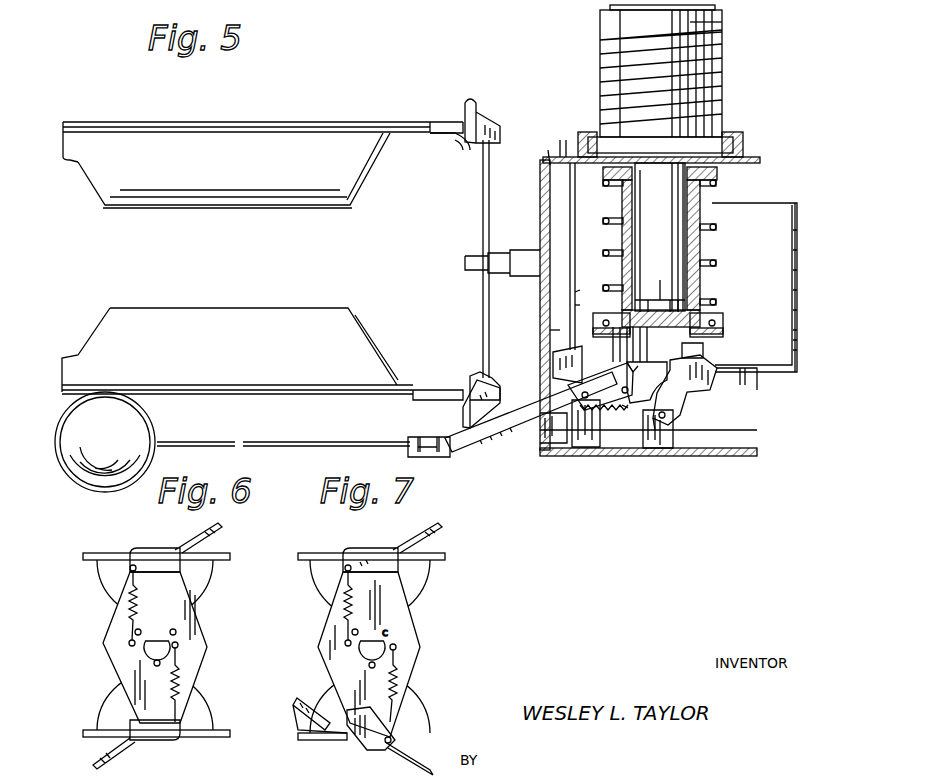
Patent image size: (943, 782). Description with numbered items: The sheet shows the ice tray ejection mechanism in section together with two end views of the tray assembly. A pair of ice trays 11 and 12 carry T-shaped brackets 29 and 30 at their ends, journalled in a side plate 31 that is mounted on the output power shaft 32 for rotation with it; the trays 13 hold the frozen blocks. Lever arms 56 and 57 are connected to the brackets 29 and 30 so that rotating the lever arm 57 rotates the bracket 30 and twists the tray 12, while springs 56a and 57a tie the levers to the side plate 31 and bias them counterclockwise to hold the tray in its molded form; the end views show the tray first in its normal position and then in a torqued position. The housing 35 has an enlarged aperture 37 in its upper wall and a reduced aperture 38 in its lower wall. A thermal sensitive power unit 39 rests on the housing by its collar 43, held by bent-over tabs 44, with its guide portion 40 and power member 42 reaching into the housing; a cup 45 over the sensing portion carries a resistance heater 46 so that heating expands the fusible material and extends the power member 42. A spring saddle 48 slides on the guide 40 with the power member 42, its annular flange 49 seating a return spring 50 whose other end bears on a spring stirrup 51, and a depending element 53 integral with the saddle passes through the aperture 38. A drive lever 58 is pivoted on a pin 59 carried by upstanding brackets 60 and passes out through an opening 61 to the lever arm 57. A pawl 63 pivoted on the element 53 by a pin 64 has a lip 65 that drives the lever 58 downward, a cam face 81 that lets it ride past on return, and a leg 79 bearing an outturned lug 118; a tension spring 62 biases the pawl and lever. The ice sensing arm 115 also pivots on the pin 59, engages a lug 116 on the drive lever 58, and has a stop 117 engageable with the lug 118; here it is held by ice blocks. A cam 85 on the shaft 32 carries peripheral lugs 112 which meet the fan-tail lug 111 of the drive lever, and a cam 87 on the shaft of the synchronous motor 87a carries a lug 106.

In FIG. 5, the ice tray 11 is at (252, 113).
In FIG. 6, the ice tray 11 is at (224, 586).
In FIG. 7, the ice tray 11 is at (454, 584).
In FIG. 5, the ice tray 12 is at (253, 409).
In FIG. 6, the ice tray 12 is at (87, 708).
In FIG. 7, the ice tray 12 is at (434, 704).
In FIG. 5, the tray 13 is at (262, 172).
In FIG. 5, the T-shaped bracket 29 is at (470, 150).
In FIG. 5, the T-shaped bracket 30 is at (480, 378).
In FIG. 5, the side plate 31 is at (483, 218).
In FIG. 5, the output power shaft 32 is at (465, 263).
In FIG. 5, the housing 35 is at (562, 152).
In FIG. 5, the radially enlarged aperture 37 is at (720, 165).
In FIG. 5, the radially reduced aperture 38 is at (648, 460).
In FIG. 5, the thermal sensitive power unit 39 is at (750, 52).
In FIG. 5, the guide portion 40 is at (670, 253).
In FIG. 5, the power member or piston 42 is at (700, 310).
In FIG. 5, the collar 43 is at (740, 148).
In FIG. 5, the tabs 44 is at (585, 132).
In FIG. 5, the cup 45 is at (706, 30).
In FIG. 5, the resistance heater 46 is at (600, 42).
In FIG. 5, the spring saddle 48 is at (706, 212).
In FIG. 5, the annular flange 49 is at (705, 184).
In FIG. 5, the return spring 50 is at (712, 228).
In FIG. 5, the spring stirrup 51 is at (724, 320).
In FIG. 5, the depending element 53 is at (660, 450).
In FIG. 5, the lever arm 56 is at (491, 114).
In FIG. 6, the lever arm 56 is at (185, 547).
In FIG. 7, the lever arm 56 is at (400, 547).
In FIG. 5, the lever arm 57 is at (456, 420).
In FIG. 6, the lever arm 57 is at (145, 740).
In FIG. 7, the lever arm 57 is at (360, 745).
In FIG. 5, the drive lever 58 is at (462, 445).
In FIG. 5, the pin 59 is at (580, 395).
In FIG. 5, the upstanding brackets 60 is at (580, 440).
In FIG. 5, the opening 61 is at (545, 356).
In FIG. 5, the tension spring 62 is at (623, 412).
In FIG. 5, the pawl 63 is at (706, 400).
In FIG. 5, the pin 64 is at (668, 420).
In FIG. 5, the lip 65 is at (704, 352).
In FIG. 5, the leg 79 is at (643, 425).
In FIG. 5, the cam face 81 is at (730, 360).
In FIG. 5, the cam 85 is at (546, 180).
In FIG. 5, the cam 87 is at (600, 190).
In FIG. 5, the synchronous motor 87a is at (775, 280).
In FIG. 5, the lug 106 is at (572, 295).
In FIG. 5, the fan-tail lug 111 is at (572, 310).
In FIG. 5, the peripheral lugs 112 is at (546, 165).
In FIG. 5, the ice sensing arm 115 is at (400, 440).
In FIG. 5, the lug 116 is at (548, 440).
In FIG. 5, the stop 117 is at (627, 364).
In FIG. 5, the outturned lug 118 is at (622, 408).
In FIG. 6, the spring 56a is at (125, 610).
In FIG. 7, the spring 56a is at (343, 610).
In FIG. 6, the spring 57a is at (180, 670).
In FIG. 7, the spring 57a is at (418, 660).